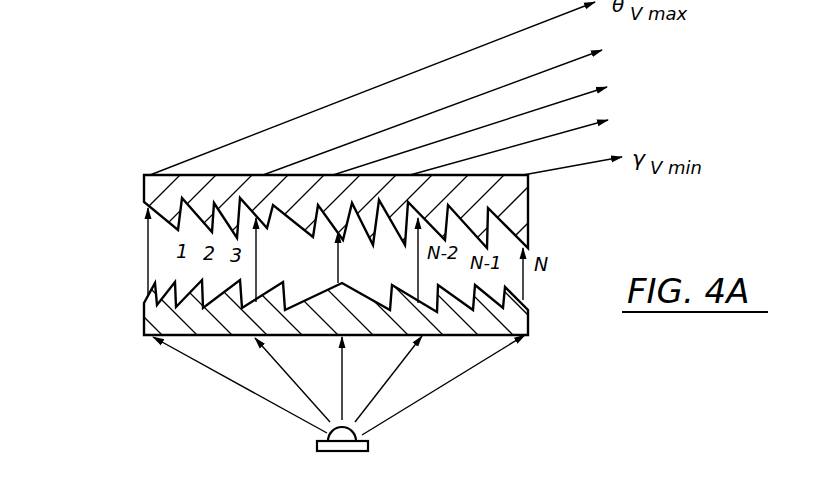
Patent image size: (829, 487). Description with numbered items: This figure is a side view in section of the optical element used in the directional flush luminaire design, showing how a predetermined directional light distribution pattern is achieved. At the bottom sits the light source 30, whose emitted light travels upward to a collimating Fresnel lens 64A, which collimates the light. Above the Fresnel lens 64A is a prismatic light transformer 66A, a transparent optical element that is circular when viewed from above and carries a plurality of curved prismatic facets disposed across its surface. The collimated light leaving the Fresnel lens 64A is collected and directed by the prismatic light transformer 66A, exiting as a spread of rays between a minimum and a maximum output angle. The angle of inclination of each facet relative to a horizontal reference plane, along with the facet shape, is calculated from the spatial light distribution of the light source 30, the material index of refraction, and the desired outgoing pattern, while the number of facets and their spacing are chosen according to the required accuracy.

The prismatic light transformer 66A is at (143, 190).
The collimating Fresnel lens 64A is at (143, 313).
The light source 30 is at (312, 440).